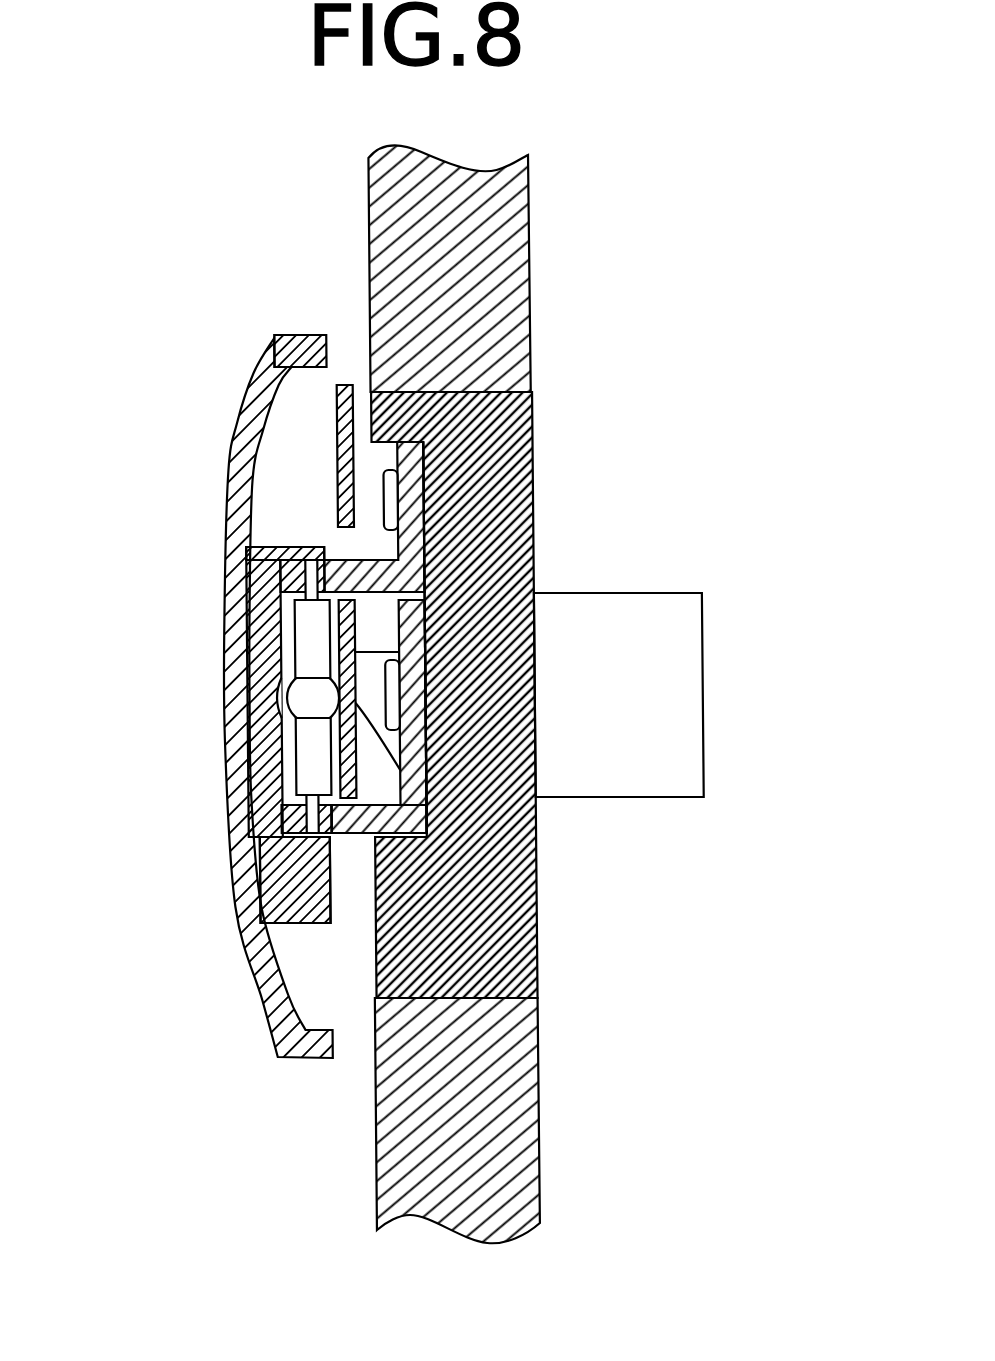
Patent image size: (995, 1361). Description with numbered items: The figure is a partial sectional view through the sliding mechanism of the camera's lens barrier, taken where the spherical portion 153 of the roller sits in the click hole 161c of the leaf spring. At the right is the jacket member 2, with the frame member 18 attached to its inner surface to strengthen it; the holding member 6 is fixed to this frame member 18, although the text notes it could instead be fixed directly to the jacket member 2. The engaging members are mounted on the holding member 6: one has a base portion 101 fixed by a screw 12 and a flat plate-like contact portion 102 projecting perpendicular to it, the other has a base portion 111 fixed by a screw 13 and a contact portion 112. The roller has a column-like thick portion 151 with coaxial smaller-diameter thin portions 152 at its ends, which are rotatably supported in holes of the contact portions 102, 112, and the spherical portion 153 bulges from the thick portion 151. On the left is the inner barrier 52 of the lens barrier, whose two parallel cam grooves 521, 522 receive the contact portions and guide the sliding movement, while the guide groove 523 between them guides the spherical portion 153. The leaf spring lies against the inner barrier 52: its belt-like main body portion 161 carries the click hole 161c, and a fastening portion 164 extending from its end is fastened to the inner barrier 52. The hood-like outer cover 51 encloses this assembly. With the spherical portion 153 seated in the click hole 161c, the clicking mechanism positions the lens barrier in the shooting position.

The jacket member 2 is at (509, 207).
The holding member 6 is at (507, 433).
The screw 12 is at (395, 491).
The screw 13 is at (396, 695).
The frame member 18 is at (675, 779).
The cover 51 is at (247, 405).
The inner barrier 52 is at (254, 862).
The base portion 101 is at (421, 540).
The contact portion 102 is at (359, 560).
The base portion 111 is at (421, 668).
The contact portion 112 is at (358, 835).
The thick portion 151 is at (304, 632).
The thin portions 152 is at (306, 552).
The spherical portion 153 is at (300, 698).
The main body portion 161 is at (421, 650).
The click hole 161c is at (421, 834).
The fastening portion 164 is at (273, 338).
The cam groove 521 is at (279, 592).
The cam groove 522 is at (277, 812).
The guide groove 523 is at (262, 738).